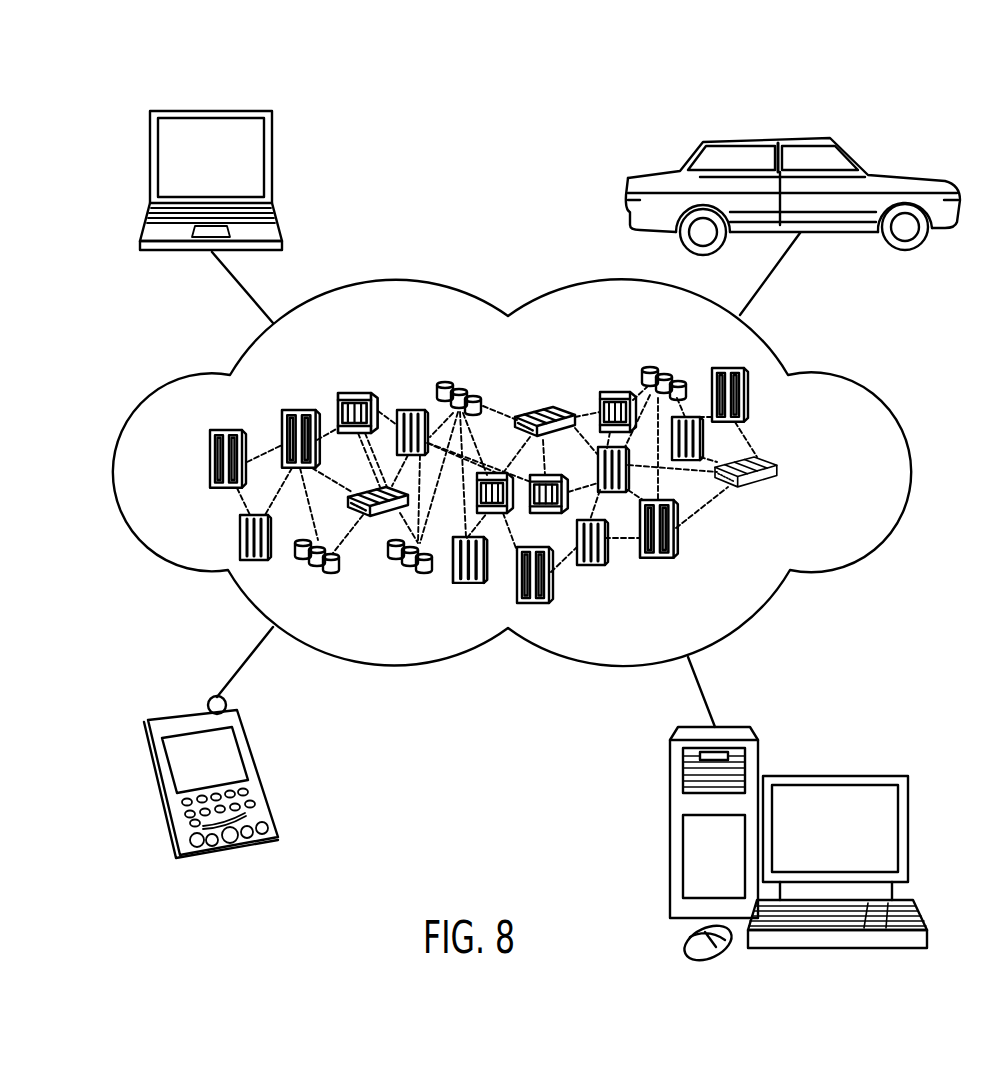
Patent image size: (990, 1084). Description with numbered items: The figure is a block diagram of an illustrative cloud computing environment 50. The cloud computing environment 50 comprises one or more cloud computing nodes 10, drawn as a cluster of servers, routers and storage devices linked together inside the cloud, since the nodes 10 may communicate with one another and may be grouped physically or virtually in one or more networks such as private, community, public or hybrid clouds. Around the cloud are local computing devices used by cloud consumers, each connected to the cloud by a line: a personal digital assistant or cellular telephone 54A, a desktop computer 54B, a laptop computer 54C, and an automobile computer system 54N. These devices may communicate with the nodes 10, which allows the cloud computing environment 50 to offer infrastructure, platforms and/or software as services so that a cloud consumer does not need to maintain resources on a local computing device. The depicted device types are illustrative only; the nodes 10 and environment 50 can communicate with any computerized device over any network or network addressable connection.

The cloud computing node 10 is at (796, 476).
The cloud computing environment 50 is at (848, 380).
The personal digital assistant (PDA) or cellular telephone 54A is at (190, 710).
The desktop computer 54B is at (835, 775).
The laptop computer 54C is at (210, 111).
The automobile computer system 54N is at (770, 137).